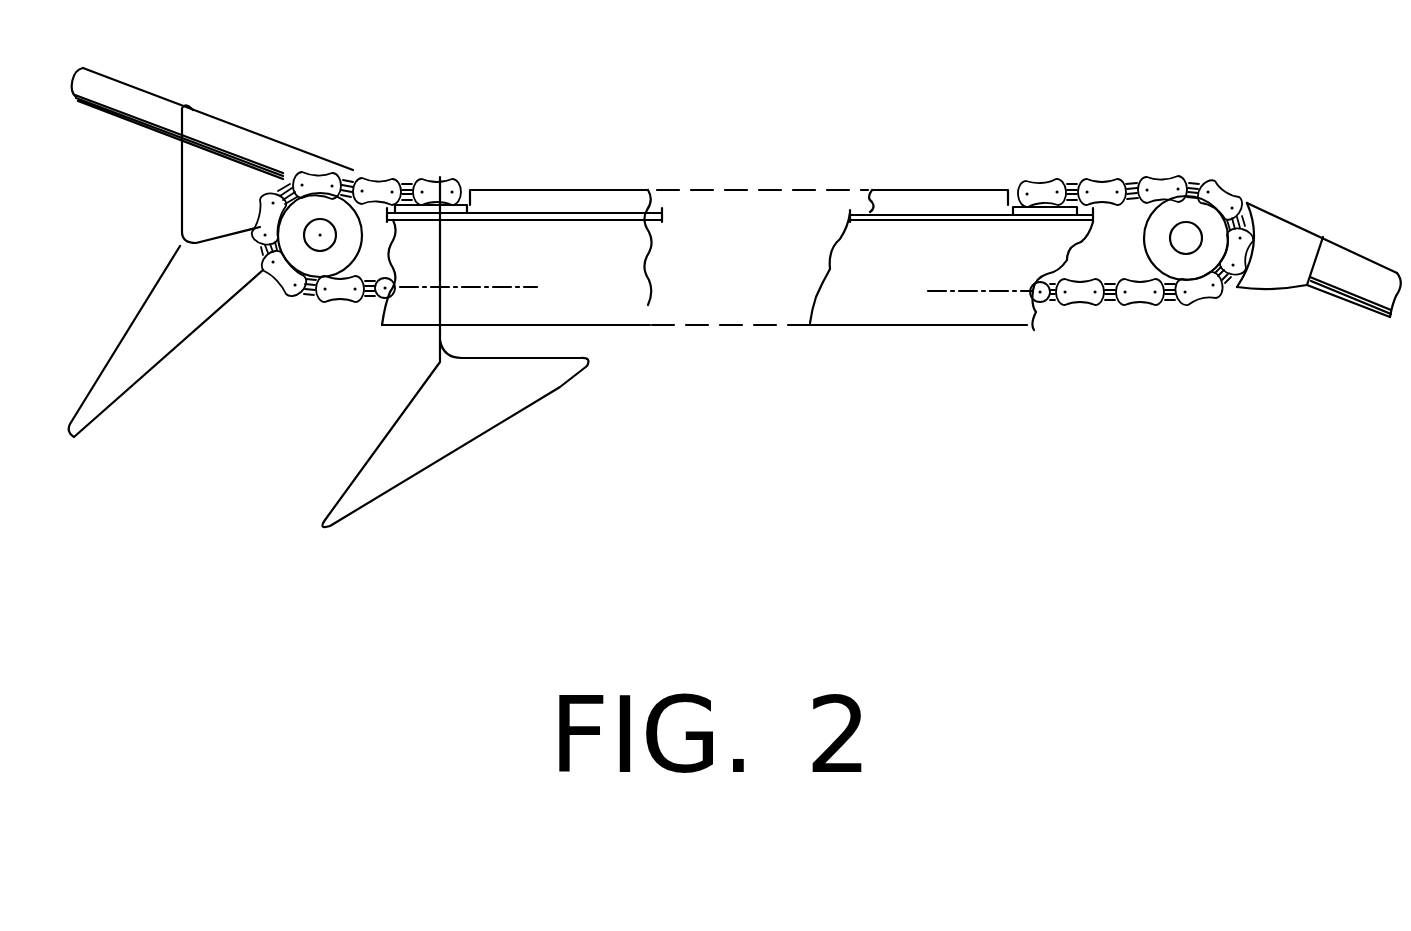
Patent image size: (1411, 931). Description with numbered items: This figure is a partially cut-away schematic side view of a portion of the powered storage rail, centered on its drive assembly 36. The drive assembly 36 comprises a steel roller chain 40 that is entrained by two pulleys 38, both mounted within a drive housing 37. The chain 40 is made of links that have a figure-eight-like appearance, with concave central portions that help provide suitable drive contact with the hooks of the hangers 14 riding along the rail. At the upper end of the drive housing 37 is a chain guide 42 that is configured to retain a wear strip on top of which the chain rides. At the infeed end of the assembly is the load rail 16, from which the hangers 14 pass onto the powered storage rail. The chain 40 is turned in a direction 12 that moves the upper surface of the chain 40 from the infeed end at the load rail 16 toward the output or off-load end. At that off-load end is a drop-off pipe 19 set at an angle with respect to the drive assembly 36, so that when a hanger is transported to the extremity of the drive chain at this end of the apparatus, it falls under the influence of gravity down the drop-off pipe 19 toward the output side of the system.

The direction 12 is at (970, 452).
The hangers 14 is at (105, 418).
The load rail 16 is at (140, 88).
The drop-off pipe 19 is at (1353, 285).
The drive assembly 36 is at (372, 317).
The drive housing 37 is at (615, 307).
The pulleys 38 is at (345, 218).
The roller chain 40 is at (330, 300).
The chain guide 42 is at (613, 188).